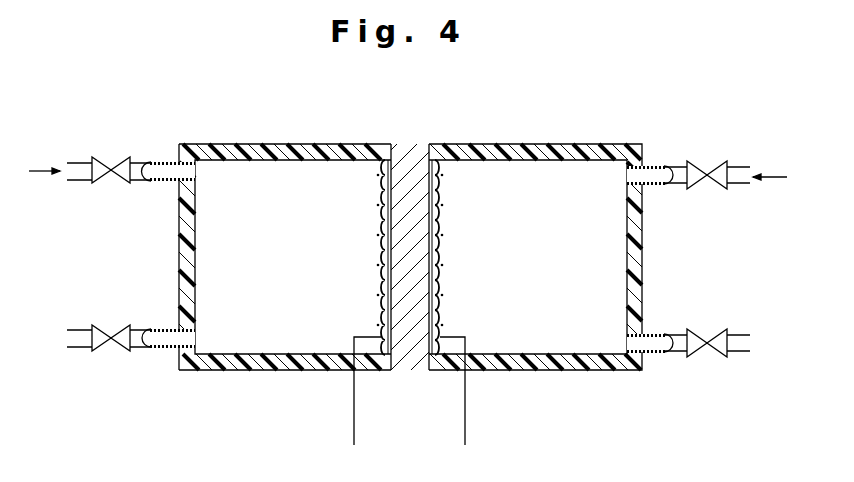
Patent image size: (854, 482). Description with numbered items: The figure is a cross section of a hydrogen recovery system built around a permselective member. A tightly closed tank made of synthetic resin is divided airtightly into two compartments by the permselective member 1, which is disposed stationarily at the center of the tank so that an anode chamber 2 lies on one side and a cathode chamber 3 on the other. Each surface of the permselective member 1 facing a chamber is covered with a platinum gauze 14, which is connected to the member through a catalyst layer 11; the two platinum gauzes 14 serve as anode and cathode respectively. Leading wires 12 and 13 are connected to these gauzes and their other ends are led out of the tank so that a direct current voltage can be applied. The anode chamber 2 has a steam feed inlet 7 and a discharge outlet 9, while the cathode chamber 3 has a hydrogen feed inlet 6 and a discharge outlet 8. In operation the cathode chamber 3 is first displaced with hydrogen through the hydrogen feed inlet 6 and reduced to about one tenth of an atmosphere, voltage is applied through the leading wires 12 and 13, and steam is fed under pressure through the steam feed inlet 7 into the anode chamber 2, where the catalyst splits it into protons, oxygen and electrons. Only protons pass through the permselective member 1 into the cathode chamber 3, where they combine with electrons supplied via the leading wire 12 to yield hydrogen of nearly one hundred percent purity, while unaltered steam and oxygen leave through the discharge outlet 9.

The permselective member 1 is at (408, 172).
The anode chamber 2 is at (276, 271).
The cathode chamber 3 is at (548, 272).
The hydrogen feed inlet 6 is at (657, 175).
The steam feed inlet 7 is at (164, 170).
The discharge outlet 8 is at (651, 343).
The discharge outlet 9 is at (163, 337).
The catalyst layer 11 is at (383, 212).
The leading wire 12 is at (354, 411).
The leading wire 13 is at (466, 418).
The platinum gauze 14 is at (382, 262).